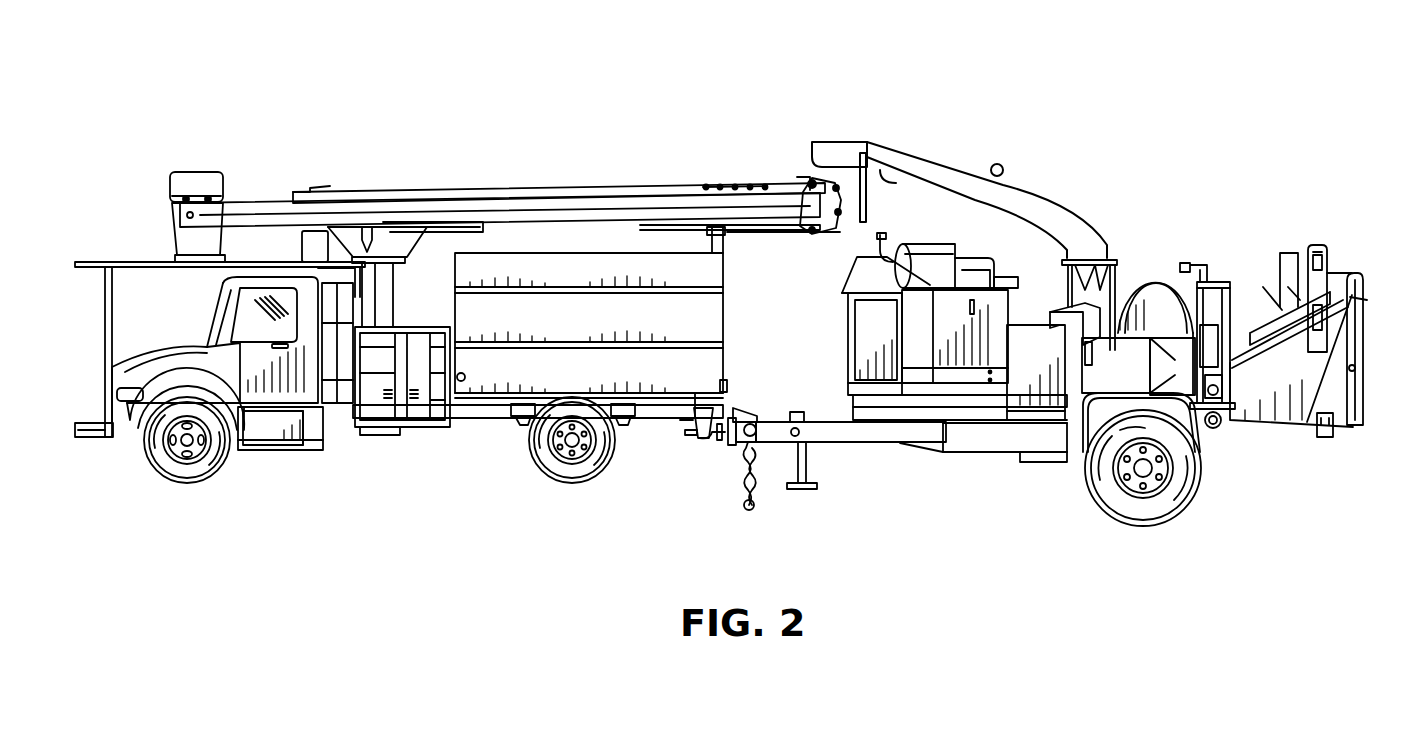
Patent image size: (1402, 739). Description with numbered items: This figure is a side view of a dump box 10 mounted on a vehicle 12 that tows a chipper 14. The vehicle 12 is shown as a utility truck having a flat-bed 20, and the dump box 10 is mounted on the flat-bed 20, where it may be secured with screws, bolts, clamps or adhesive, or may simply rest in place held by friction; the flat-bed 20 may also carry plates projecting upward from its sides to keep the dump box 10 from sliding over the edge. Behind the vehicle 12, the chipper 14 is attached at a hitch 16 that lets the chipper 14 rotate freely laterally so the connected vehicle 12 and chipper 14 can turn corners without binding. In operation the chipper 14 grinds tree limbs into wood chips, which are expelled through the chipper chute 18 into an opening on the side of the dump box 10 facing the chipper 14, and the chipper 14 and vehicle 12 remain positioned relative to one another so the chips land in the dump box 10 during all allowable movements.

The dump box 10 is at (636, 445).
The vehicle 12 is at (153, 214).
The chipper 14 is at (1003, 472).
The hitch 16 is at (719, 446).
The chipper chute 18 is at (835, 150).
The flat-bed 20 is at (1343, 386).